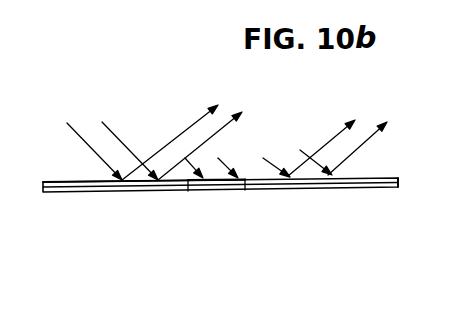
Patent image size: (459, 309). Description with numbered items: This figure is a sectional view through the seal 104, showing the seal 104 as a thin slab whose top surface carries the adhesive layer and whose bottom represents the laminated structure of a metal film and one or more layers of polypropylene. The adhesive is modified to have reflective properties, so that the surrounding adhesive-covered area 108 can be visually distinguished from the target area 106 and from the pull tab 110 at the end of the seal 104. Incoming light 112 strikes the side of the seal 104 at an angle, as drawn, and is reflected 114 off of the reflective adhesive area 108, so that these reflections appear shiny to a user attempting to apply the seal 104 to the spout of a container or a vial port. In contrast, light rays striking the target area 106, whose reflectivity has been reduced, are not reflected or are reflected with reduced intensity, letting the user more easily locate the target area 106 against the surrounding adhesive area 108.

The seal 104 is at (142, 216).
The target area 106 is at (232, 178).
The adhesive-covered area 108 is at (93, 178).
The pull tab 110 is at (380, 175).
The light 112 is at (105, 157).
The reflected light 114 is at (207, 133).